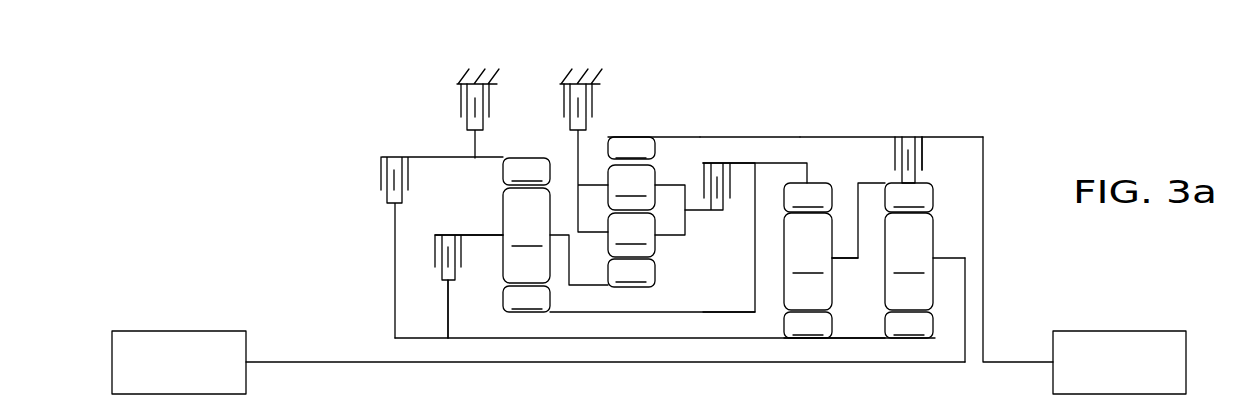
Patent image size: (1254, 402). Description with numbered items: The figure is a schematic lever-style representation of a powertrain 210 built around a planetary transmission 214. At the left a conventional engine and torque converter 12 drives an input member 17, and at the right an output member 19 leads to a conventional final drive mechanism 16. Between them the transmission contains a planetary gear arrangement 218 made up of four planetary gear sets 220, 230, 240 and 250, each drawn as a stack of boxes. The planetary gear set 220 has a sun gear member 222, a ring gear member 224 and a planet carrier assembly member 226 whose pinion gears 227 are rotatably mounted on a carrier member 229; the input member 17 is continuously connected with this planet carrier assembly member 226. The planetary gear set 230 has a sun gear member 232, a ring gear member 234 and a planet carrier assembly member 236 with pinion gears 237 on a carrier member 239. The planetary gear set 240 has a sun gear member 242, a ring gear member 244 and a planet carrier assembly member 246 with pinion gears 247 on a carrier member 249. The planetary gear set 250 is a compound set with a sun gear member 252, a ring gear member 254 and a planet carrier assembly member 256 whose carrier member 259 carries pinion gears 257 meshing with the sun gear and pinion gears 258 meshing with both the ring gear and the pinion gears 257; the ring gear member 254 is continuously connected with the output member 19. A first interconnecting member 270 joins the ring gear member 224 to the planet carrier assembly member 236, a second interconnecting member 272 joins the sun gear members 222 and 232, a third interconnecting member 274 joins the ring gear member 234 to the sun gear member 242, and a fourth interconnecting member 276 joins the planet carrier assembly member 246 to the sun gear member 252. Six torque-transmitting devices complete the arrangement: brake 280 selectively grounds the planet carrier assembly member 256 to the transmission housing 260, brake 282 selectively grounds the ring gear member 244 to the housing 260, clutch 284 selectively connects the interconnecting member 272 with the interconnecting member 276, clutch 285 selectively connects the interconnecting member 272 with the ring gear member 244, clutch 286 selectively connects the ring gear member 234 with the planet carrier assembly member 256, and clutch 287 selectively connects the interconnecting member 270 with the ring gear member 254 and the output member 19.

The engine and torque converter 12 is at (168, 316).
The final drive mechanism 16 is at (1135, 316).
The input member 17 is at (278, 362).
The output member 19 is at (1015, 362).
The powertrain 210 is at (650, 73).
The planetary transmission 214 is at (723, 73).
The planetary gear arrangement 218 is at (803, 73).
The planetary gear set 220 is at (922, 291).
The sun gear member 222 is at (905, 347).
The ring gear member 224 is at (909, 197).
The planet carrier assembly member 226 is at (940, 245).
The pinion gears 227 is at (909, 261).
The carrier member 229 is at (950, 258).
The planetary gear set 230 is at (794, 291).
The sun gear member 232 is at (812, 347).
The ring gear member 234 is at (808, 197).
The planet carrier assembly member 236 is at (838, 274).
The pinion gears 237 is at (808, 261).
The carrier member 239 is at (852, 260).
The planetary gear set 240 is at (509, 279).
The sun gear member 242 is at (527, 322).
The ring gear member 244 is at (526, 171).
The planet carrier assembly member 246 is at (493, 218).
The pinion gears 247 is at (526, 235).
The carrier member 249 is at (487, 233).
The planetary gear set 250 is at (647, 268).
The sun gear member 252 is at (628, 295).
The ring gear member 254 is at (631, 148).
The planet carrier assembly member 256 is at (665, 246).
The pinion gears 257 is at (631, 235).
The pinion gears 258 is at (631, 187).
The carrier member 259 is at (672, 236).
The transmission housing 260 is at (485, 68).
The first interconnecting member 270 is at (855, 197).
The second interconnecting member 272 is at (857, 338).
The third interconnecting member 274 is at (703, 312).
The fourth interconnecting member 276 is at (589, 312).
The brake 280 is at (555, 107).
The brake 282 is at (450, 107).
The clutch 284 is at (422, 252).
The clutch 285 is at (372, 183).
The clutch 286 is at (695, 179).
The clutch 287 is at (932, 157).